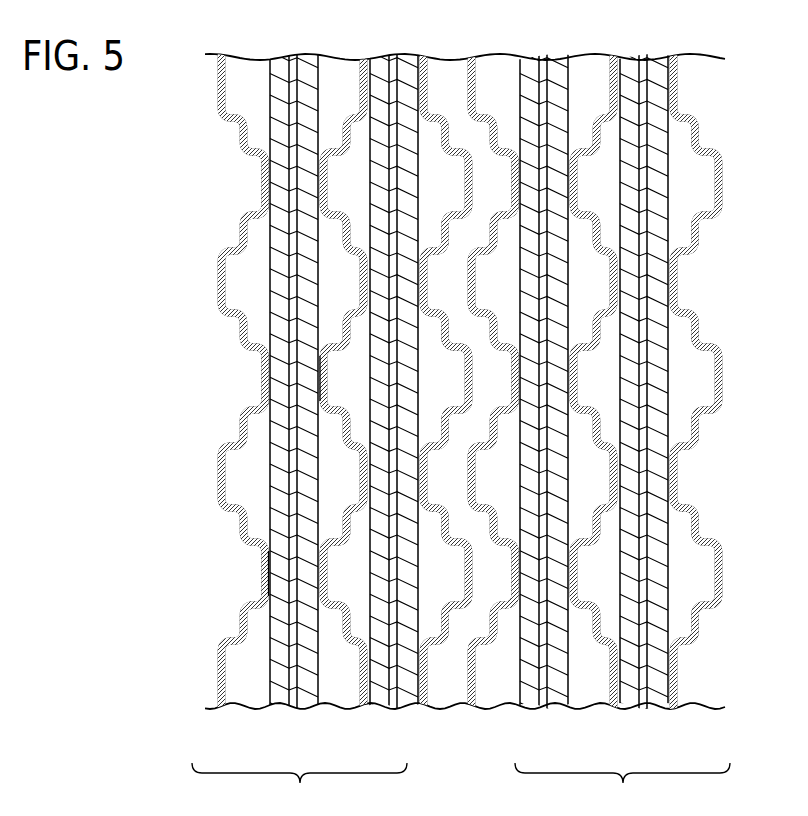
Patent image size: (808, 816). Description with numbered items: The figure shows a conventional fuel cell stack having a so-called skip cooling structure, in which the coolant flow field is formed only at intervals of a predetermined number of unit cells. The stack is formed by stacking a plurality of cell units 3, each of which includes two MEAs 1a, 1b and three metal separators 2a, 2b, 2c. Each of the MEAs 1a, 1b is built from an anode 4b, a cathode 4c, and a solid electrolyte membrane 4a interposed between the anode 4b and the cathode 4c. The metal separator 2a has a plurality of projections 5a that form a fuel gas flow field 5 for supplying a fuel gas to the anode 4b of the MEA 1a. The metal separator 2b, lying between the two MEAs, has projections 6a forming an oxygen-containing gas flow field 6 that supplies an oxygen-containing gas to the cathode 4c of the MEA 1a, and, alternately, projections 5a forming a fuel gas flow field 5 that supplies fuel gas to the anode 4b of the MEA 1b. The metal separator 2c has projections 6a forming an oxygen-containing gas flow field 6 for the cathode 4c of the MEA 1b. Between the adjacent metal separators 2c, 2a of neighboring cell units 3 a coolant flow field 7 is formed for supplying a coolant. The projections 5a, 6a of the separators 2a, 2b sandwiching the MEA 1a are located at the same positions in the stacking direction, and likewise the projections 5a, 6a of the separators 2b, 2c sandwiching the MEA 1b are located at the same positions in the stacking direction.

The MEA 1a is at (263, 365).
The MEA 1b is at (393, 53).
The metal separator 2a is at (238, 713).
The metal separator 2b is at (355, 713).
The metal separator 2c is at (433, 713).
The cell unit 3 is at (461, 785).
The solid electrolyte membrane 4a is at (293, 288).
The anode 4b is at (277, 233).
The cathode 4c is at (312, 332).
The fuel gas flow field 5 is at (262, 517).
The projection 5a is at (362, 440).
The oxygen-containing gas flow field 6 is at (332, 475).
The projection 6a is at (325, 377).
The coolant flow field 7 is at (477, 587).